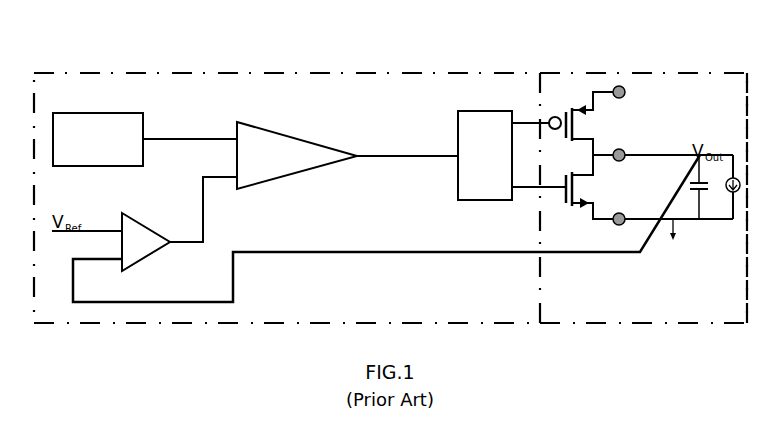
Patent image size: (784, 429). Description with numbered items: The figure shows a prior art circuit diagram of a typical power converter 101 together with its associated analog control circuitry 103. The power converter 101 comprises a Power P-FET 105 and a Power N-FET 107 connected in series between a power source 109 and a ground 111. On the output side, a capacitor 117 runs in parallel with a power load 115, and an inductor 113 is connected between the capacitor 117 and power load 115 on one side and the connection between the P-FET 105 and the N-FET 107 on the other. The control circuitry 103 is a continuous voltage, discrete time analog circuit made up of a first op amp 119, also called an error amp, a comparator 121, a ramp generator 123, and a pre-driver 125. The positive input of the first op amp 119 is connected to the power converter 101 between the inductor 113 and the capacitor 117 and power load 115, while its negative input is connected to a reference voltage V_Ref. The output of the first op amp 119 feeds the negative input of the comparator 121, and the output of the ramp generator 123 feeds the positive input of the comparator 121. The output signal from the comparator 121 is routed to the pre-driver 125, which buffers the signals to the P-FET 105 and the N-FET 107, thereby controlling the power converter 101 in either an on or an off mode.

The power converter 101 is at (659, 70).
The control circuitry 103 is at (331, 72).
The Power P-FET 105 is at (578, 122).
The Power N-FET 107 is at (578, 184).
The power source 109 is at (629, 91).
The ground 111 is at (683, 241).
The inductor 113 is at (656, 153).
The power load 115 is at (735, 151).
The capacitor 117 is at (691, 187).
The first op amp 119 is at (145, 258).
The comparator 121 is at (310, 140).
The ramp generator 123 is at (98, 112).
The pre-driver 125 is at (475, 111).